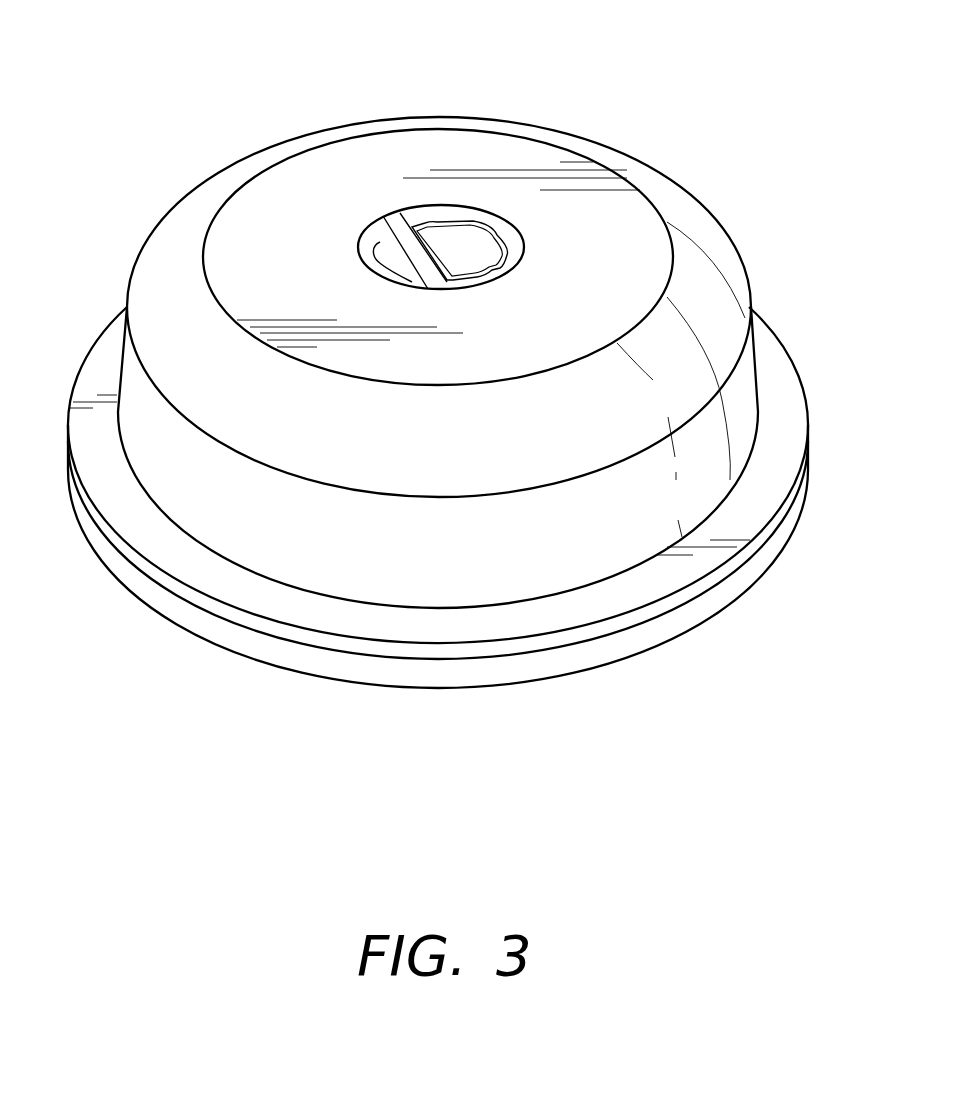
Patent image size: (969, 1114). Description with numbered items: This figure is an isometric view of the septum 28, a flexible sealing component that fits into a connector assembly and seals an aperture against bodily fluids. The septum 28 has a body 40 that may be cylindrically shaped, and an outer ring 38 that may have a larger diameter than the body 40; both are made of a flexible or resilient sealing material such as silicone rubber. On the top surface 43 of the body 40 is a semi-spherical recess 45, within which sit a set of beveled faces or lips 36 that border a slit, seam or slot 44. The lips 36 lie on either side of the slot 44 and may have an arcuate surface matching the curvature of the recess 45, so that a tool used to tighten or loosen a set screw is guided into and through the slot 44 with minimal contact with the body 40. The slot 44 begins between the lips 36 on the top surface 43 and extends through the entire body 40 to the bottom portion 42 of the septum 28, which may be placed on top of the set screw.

The septum 28 is at (693, 156).
The lips 36 is at (453, 237).
The outer ring 38 is at (223, 603).
The body 40 is at (740, 267).
The bottom portion 42 is at (460, 705).
The top surface 43 is at (318, 167).
The slot 44 is at (387, 237).
The semi-spherical recess 45 is at (402, 230).